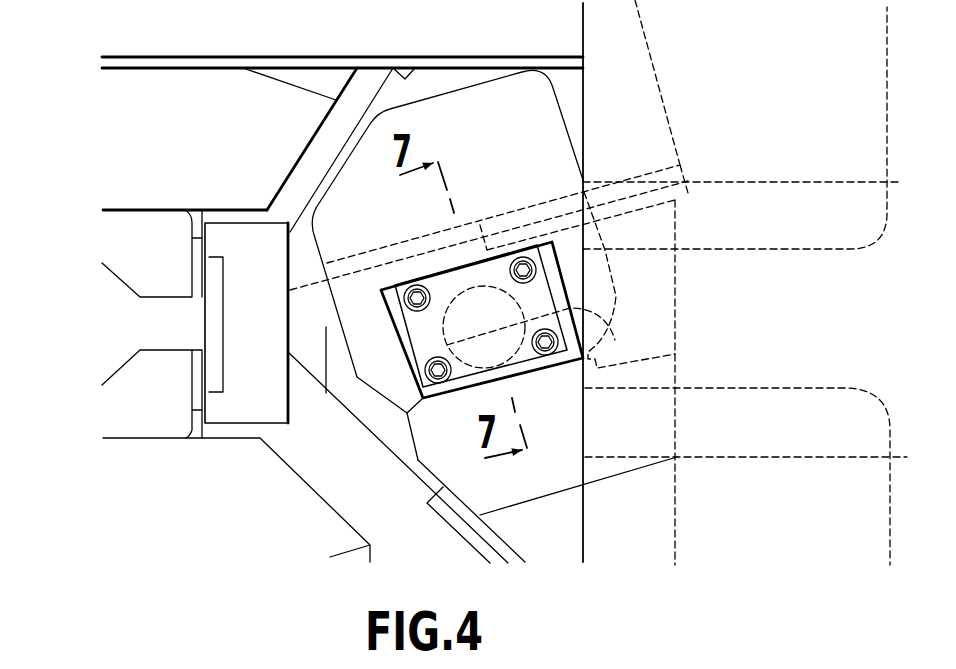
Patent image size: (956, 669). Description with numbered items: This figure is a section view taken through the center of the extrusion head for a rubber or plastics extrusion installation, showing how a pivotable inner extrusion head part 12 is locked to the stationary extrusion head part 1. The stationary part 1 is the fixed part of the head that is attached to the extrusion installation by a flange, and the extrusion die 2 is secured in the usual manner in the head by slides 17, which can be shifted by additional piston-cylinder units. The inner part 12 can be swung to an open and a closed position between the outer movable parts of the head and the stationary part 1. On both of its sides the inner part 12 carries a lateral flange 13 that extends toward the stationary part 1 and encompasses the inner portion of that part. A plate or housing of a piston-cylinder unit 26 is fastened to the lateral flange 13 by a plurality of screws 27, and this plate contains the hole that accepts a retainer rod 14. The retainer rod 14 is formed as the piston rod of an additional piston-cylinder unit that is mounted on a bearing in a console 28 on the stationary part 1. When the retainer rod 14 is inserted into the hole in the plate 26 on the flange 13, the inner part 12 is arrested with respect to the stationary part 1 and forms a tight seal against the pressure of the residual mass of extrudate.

The stationary extrusion head part 1 is at (662, 433).
The extrusion die 2 is at (262, 405).
The pivotable inner extrusion head part 12 is at (602, 62).
The lateral flange 13 is at (343, 203).
The retainer rod 14 is at (591, 353).
The slides 17 is at (162, 268).
The plate or housing of the piston-cylinder unit 26 is at (417, 342).
The screws 27 is at (536, 259).
The console 28 is at (413, 385).